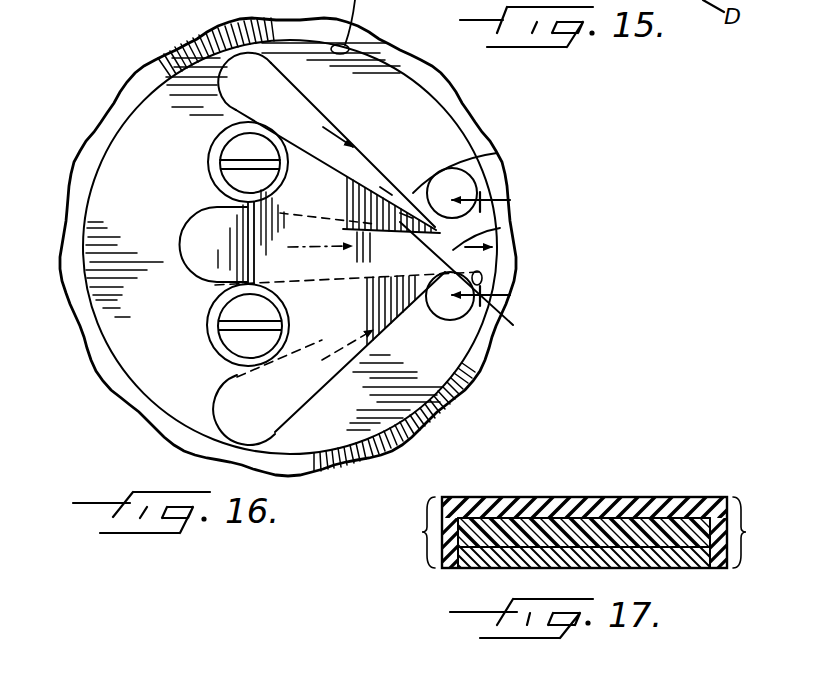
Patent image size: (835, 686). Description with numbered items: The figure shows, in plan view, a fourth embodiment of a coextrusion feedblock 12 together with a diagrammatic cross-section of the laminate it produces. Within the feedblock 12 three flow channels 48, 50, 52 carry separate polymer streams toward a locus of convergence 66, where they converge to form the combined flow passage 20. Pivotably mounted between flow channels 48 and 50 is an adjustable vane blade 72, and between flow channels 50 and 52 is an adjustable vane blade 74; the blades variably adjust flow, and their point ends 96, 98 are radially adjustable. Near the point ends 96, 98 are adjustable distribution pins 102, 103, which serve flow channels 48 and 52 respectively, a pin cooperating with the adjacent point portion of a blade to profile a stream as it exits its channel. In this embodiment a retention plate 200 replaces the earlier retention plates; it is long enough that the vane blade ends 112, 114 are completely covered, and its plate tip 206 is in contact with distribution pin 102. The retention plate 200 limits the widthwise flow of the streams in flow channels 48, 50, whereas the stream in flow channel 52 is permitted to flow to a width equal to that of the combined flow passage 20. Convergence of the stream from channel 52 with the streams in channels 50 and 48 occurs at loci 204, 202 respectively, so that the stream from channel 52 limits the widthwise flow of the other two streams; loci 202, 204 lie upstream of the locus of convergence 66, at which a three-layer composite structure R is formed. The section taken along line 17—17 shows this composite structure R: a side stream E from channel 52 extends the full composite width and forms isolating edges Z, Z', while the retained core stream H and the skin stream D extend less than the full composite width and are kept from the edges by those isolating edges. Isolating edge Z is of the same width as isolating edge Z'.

In FIG. 16, the feedblock 12 is at (160, 88).
In FIG. 16, the flow channel 52 is at (267, 77).
In FIG. 16, the vane blade 74 is at (358, 170).
In FIG. 16, the vane blade end 114 is at (380, 187).
In FIG. 16, the point end 98 is at (400, 213).
In FIG. 16, the locus of convergence 204 is at (350, 222).
In FIG. 16, the plate tip 206 is at (440, 262).
In FIG. 16, the vane blade end 112 is at (328, 298).
In FIG. 16, the retention plate 200 is at (207, 288).
In FIG. 16, the flow channel 50 is at (223, 227).
In FIG. 16, the flow channel 48 is at (247, 393).
In FIG. 16, the vane blade 72 is at (318, 340).
In FIG. 16, the point end 96 is at (395, 380).
In FIG. 16, the combined flow passage 20 is at (473, 280).
In FIG. 16, the distribution pin 103 is at (465, 172).
In FIG. 16, the distribution pin 102 is at (453, 320).
In FIG. 16, the section line 17— 17 is at (500, 249).
In FIG. 16, the locus of convergence 66 is at (505, 230).
In FIG. 16, the locus of convergence 202 is at (470, 258).
In FIG. 17, the composite structure R is at (548, 492).
In FIG. 17, the side stream E is at (622, 512).
In FIG. 17, the retained stream H is at (668, 532).
In FIG. 17, the stream D is at (694, 570).
In FIG. 17, the isolating edge Z' is at (412, 532).
In FIG. 17, the isolating edge Z is at (753, 532).